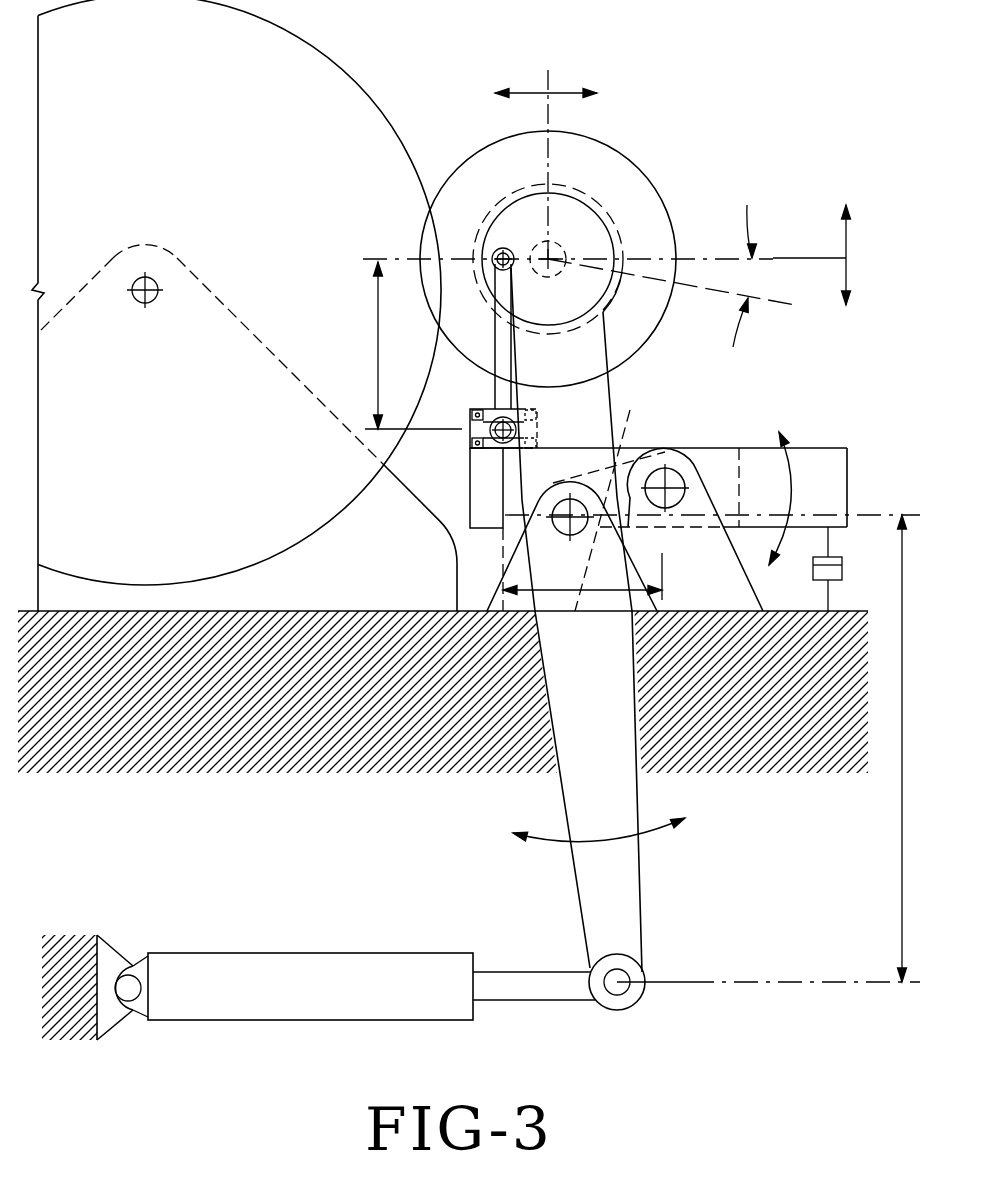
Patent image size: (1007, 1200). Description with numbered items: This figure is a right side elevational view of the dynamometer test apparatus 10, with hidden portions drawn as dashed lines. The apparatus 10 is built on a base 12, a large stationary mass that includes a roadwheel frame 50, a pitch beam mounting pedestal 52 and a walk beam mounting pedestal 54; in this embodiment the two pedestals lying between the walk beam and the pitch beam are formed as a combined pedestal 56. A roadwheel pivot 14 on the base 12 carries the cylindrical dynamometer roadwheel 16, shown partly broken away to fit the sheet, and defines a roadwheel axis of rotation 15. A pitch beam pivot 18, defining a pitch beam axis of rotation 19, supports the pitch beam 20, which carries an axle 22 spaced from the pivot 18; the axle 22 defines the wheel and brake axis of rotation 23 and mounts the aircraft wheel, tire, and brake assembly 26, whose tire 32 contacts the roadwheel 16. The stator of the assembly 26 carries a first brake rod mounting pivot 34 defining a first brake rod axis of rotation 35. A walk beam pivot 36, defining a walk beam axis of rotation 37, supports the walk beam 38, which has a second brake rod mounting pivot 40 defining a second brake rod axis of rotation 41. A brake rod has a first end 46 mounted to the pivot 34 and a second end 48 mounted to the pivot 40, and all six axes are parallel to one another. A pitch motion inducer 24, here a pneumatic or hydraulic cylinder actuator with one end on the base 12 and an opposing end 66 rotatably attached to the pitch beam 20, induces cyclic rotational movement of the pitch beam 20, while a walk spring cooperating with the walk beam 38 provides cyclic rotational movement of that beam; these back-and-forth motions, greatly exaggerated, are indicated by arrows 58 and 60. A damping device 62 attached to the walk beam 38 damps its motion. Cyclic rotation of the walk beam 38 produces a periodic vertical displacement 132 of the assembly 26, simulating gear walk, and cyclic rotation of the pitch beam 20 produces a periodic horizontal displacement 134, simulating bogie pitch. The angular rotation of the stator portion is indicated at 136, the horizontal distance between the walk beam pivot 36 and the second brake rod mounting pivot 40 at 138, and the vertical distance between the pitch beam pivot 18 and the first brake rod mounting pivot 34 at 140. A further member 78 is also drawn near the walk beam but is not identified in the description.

The dynamometer test apparatus 10 is at (574, 37).
The base 12 is at (374, 703).
The roadwheel pivot 14 is at (152, 303).
The roadwheel axis of rotation 15 is at (143, 290).
The dynamometer roadwheel 16 is at (158, 130).
The pitch beam pivot 18 is at (573, 500).
The pitch beam axis of rotation 19 is at (570, 515).
The pitch beam 20 is at (599, 700).
The axle 22 is at (555, 246).
The wheel and brake axis of rotation 23 is at (549, 261).
The pitch motion inducer 24 is at (327, 998).
The aircraft wheel, tire, and brake assembly 26 is at (582, 228).
The tire 32 is at (640, 322).
The first brake rod mounting pivot 34 is at (508, 266).
The first brake rod axis of rotation 35 is at (505, 251).
The walk beam pivot 36 is at (675, 477).
The walk beam axis of rotation 37 is at (660, 480).
The walk beam 38 is at (487, 487).
The second brake rod mounting pivot 40 is at (498, 420).
The second brake rod axis of rotation 41 is at (494, 432).
The first end 46 is at (487, 230).
The second end 48 is at (493, 452).
The roadwheel frame 50 is at (392, 563).
The pitch beam mounting pedestal 52 is at (579, 568).
The walk beam mounting pedestal 54 is at (627, 458).
The combined pedestal 56 is at (707, 568).
The arrow 58 is at (603, 838).
The arrow 60 is at (793, 480).
The damping device 62 is at (842, 575).
The opposing end 66 is at (632, 998).
The member 78 is at (856, 465).
The periodic vertical displacement 132 is at (812, 255).
The periodic horizontal displacement 134 is at (572, 93).
The angular rotation of the stator portion 136 is at (671, 276).
The horizontal distance between walk beam pivot and second brake rod mounting pivot 138 is at (509, 457).
The vertical distance between pitch beam pivot and first brake rod mounting pivot 140 is at (899, 748).